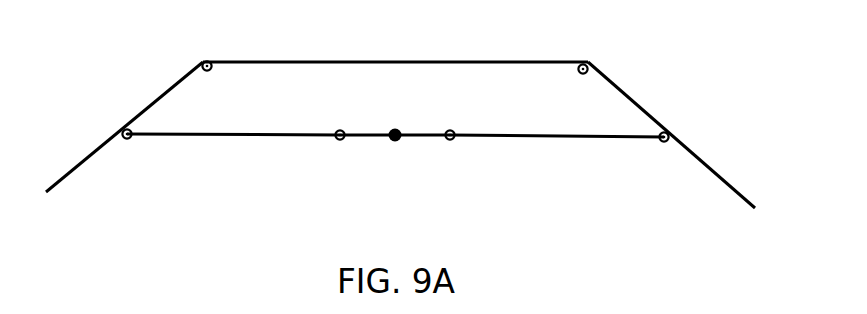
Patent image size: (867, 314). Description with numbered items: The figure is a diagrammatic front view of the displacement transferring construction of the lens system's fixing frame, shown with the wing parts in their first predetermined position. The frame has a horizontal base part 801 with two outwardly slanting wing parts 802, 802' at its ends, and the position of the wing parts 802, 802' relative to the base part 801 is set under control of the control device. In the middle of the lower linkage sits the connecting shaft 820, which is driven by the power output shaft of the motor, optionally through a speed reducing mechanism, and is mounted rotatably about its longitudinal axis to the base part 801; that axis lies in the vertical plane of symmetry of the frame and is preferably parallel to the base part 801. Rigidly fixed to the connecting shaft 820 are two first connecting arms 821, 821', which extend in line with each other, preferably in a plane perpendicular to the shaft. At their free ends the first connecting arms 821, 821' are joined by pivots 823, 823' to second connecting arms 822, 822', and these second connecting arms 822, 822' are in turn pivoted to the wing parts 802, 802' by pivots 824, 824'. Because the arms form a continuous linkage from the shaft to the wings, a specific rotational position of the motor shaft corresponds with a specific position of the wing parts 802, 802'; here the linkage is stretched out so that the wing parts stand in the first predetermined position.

The base part 801 is at (380, 60).
The wing part 802 is at (680, 135).
The wing part 802' is at (119, 127).
The connecting shaft 820 is at (394, 142).
The first connecting arm 821 is at (425, 106).
The first connecting arm 821' is at (358, 106).
The second connecting arm 822 is at (557, 175).
The second connecting arm 822' is at (233, 174).
The pivot 823 is at (464, 172).
The pivot 823' is at (324, 172).
The pivot 824 is at (660, 173).
The pivot 824' is at (135, 172).